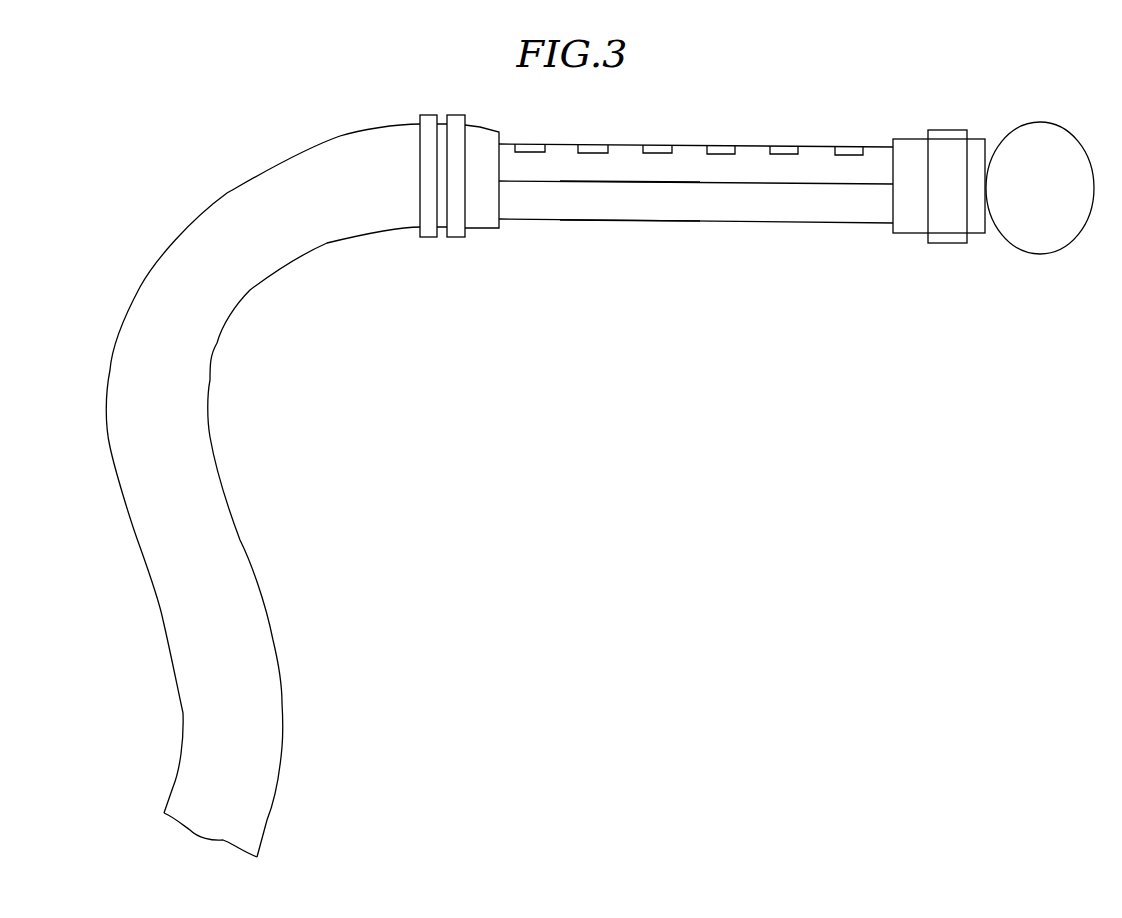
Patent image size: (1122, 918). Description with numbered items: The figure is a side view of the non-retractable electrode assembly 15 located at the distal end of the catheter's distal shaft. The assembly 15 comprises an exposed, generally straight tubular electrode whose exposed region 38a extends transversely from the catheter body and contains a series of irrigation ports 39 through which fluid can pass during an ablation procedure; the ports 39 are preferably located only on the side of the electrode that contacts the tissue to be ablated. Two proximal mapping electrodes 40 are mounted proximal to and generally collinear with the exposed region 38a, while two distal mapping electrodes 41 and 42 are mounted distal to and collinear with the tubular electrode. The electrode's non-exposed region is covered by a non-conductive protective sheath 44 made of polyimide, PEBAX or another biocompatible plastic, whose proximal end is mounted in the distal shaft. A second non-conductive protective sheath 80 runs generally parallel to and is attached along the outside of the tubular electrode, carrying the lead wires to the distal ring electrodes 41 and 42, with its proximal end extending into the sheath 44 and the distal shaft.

The electrode assembly 15 is at (827, 110).
The exposed region of tubular electrode 38a is at (560, 145).
The irrigation ports 39 is at (658, 147).
The proximal mapping electrodes 40 is at (457, 120).
The distal mapping electrode 41 is at (947, 232).
The distal mapping electrode 42 is at (1031, 233).
The non-conductive protective sheath 44 is at (175, 257).
The non-conductive protective sheath 80 is at (610, 207).